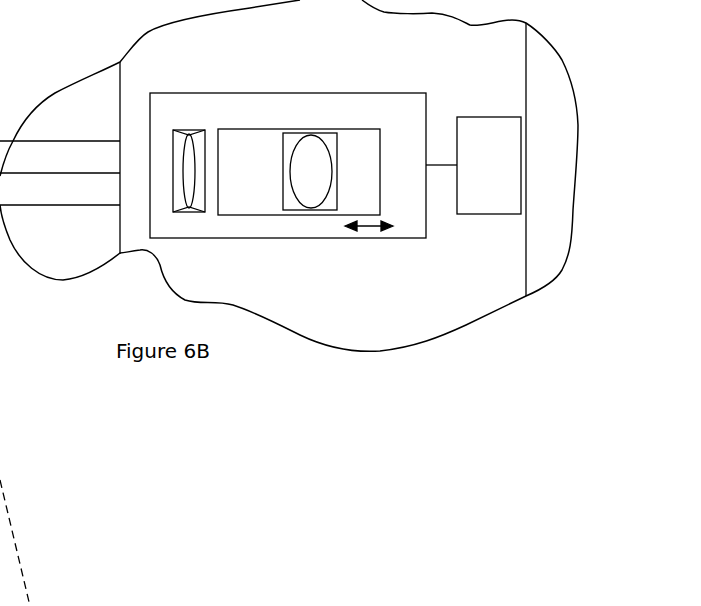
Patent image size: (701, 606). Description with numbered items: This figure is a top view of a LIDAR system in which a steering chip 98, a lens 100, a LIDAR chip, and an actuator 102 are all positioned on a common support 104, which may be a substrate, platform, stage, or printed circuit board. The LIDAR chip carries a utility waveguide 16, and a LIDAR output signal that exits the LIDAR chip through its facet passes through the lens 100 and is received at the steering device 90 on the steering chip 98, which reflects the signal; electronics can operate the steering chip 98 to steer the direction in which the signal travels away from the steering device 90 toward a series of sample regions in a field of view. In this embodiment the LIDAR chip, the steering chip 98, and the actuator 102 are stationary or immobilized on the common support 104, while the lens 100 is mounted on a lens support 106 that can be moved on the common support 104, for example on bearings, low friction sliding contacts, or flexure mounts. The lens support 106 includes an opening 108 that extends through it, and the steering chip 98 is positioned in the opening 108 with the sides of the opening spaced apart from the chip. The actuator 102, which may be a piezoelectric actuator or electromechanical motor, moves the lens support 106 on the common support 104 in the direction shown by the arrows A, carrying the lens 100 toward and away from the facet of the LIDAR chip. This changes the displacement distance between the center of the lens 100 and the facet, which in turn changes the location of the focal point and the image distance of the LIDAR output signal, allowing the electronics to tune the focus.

The utility waveguide 16 is at (95, 172).
The steering device 90 is at (292, 195).
The steering chip 98 is at (274, 149).
The lens 100 is at (193, 133).
The actuator 102 is at (517, 117).
The common support 104 is at (362, 326).
The lens support 106 is at (281, 110).
The opening 108 is at (222, 202).
The arrows A is at (370, 228).